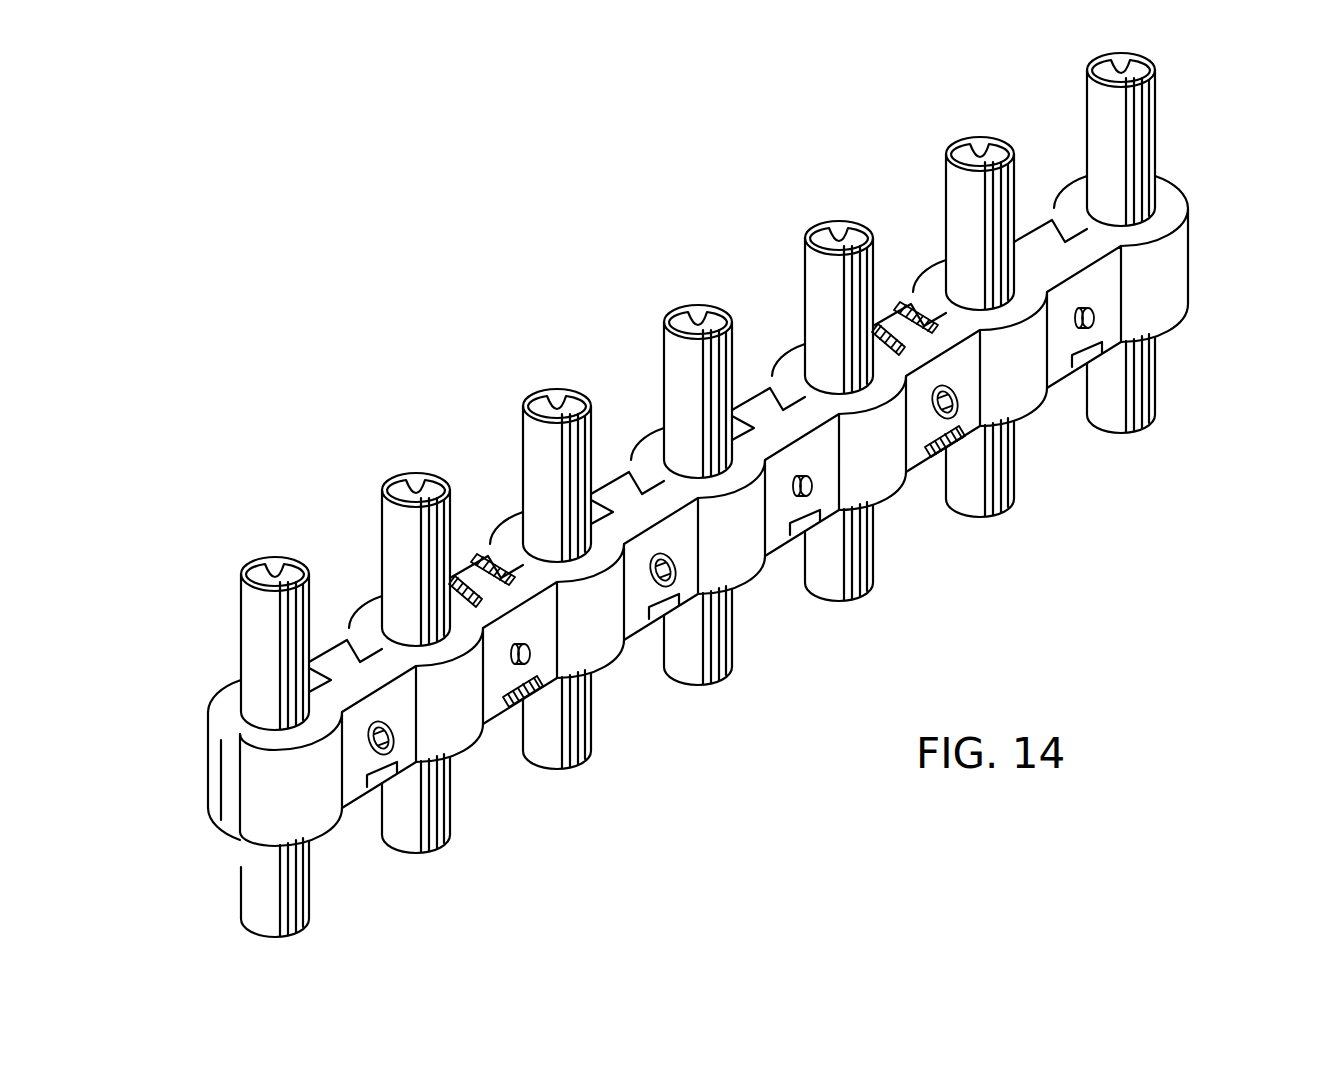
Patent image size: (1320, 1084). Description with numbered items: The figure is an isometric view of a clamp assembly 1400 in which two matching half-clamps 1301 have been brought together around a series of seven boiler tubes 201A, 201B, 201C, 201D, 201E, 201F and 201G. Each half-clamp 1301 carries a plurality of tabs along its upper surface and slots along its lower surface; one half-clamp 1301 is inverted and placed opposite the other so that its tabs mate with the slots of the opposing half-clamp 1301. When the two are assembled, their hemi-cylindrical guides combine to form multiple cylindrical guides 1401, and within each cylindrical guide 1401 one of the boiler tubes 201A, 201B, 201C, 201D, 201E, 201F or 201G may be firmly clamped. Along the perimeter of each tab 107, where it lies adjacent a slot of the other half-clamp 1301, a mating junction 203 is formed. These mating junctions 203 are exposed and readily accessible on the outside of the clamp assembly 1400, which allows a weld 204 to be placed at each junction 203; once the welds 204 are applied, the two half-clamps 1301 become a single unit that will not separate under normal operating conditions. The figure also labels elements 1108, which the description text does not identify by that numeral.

The clamp assembly 1400 is at (1178, 164).
The half-clamp 1301 is at (254, 818).
The boiler tube 201A is at (260, 615).
The boiler tube 201B is at (402, 530).
The boiler tube 201C is at (537, 430).
The boiler tube 201D is at (682, 360).
The boiler tube 201E is at (822, 275).
The boiler tube 201F is at (960, 185).
The boiler tube 201G is at (1102, 108).
The screw 1108 is at (1094, 318).
The tab 107 is at (1032, 242).
The mating junction 203 is at (668, 610).
The weld 204 is at (507, 720).
The cylindrical guide 1401 is at (509, 549).